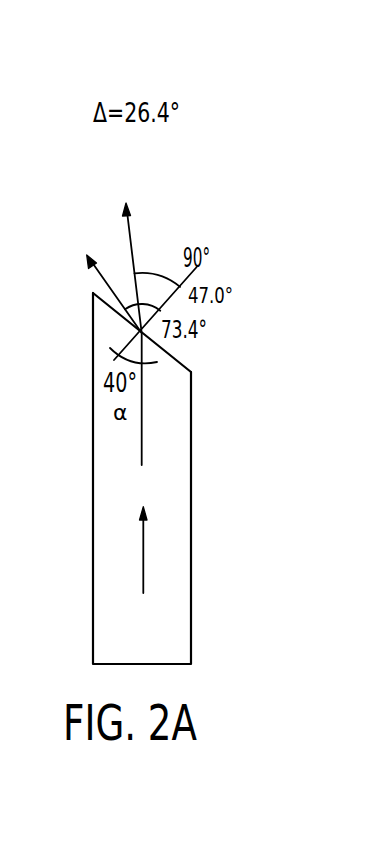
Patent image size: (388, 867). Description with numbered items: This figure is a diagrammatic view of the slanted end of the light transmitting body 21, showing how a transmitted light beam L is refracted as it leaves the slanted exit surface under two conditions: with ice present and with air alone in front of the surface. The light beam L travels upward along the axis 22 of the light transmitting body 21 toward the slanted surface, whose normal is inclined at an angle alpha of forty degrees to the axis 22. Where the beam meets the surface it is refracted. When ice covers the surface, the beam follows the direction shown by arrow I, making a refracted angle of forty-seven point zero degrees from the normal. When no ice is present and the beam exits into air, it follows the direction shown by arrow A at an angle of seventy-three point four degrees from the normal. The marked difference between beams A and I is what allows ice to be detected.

The light transmitting body 21 is at (178, 427).
The axis of the light transmitting body 22 is at (192, 388).
The light beam in air A is at (100, 279).
The light beam in ice I is at (130, 238).
The transmitted light beam L is at (142, 542).